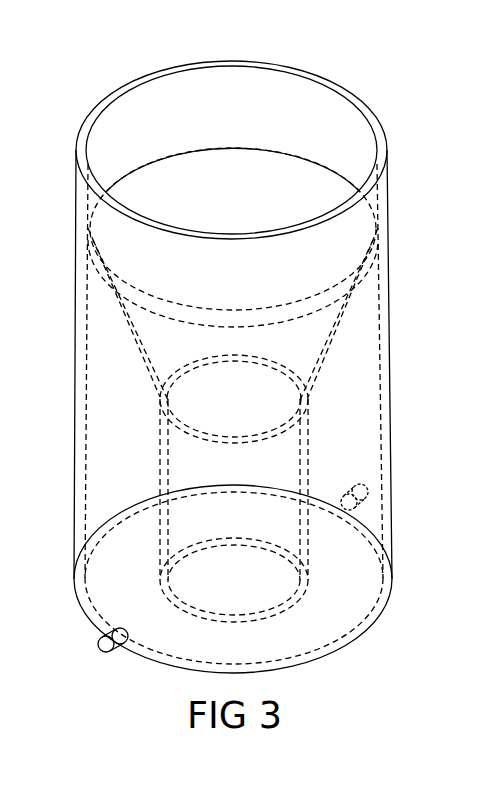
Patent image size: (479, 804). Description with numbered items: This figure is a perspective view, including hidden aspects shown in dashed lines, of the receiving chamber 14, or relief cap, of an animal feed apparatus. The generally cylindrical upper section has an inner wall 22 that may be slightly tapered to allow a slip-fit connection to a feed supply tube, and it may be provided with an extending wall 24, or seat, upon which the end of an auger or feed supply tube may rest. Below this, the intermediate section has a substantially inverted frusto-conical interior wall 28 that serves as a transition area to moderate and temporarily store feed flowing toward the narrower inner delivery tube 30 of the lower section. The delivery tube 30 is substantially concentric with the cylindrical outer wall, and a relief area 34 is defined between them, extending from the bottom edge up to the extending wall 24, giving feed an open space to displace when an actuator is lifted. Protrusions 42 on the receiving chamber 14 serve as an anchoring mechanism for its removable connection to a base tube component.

The receiving chamber 14 is at (63, 85).
The inner wall 22 is at (316, 123).
The extending wall 24 is at (345, 260).
The inverted frusto-conical shaped interior wall 28 is at (323, 365).
The inner delivery tube 30 is at (300, 465).
The relief area 34 is at (327, 640).
The protrusions 42 is at (98, 643).